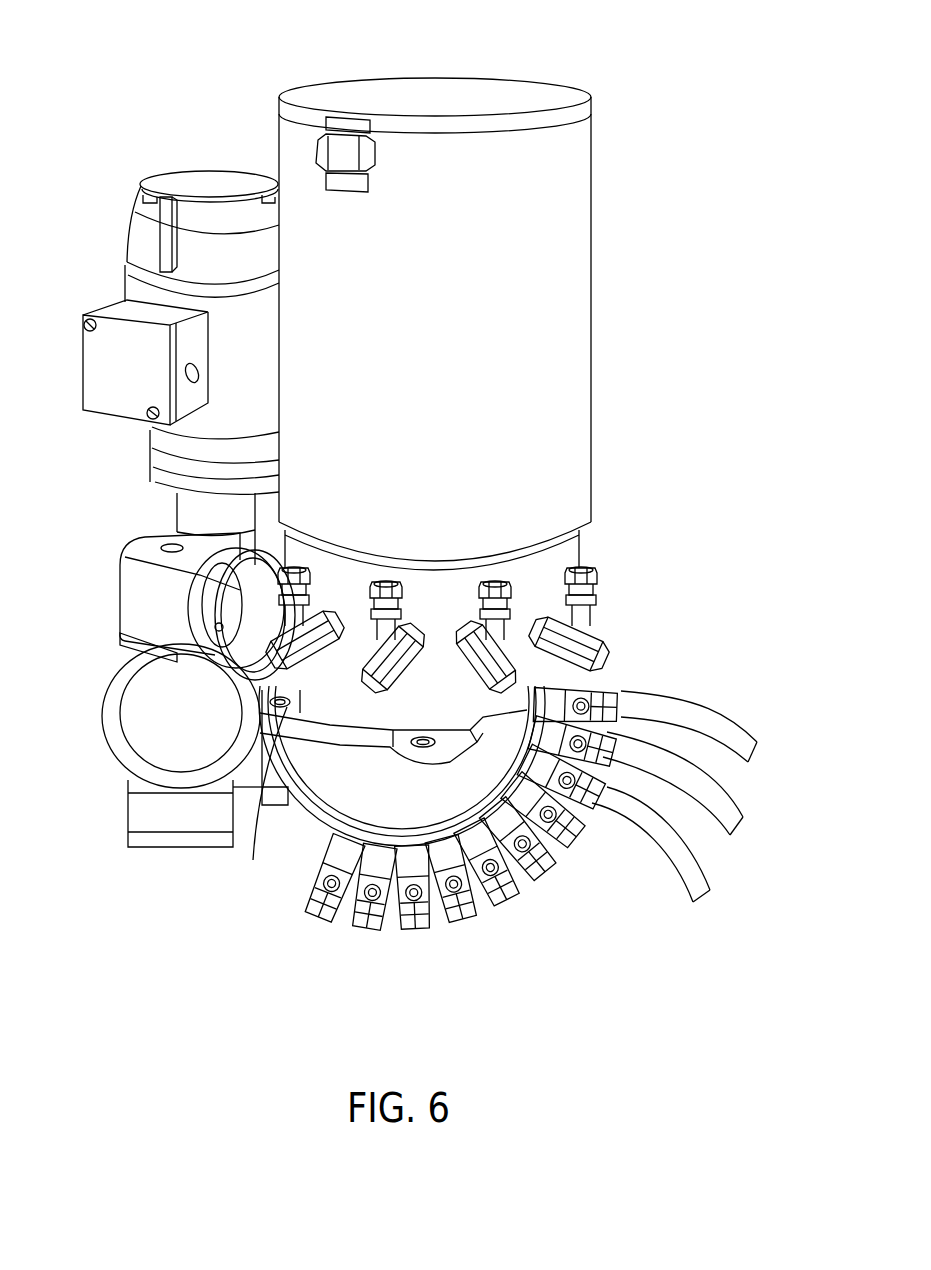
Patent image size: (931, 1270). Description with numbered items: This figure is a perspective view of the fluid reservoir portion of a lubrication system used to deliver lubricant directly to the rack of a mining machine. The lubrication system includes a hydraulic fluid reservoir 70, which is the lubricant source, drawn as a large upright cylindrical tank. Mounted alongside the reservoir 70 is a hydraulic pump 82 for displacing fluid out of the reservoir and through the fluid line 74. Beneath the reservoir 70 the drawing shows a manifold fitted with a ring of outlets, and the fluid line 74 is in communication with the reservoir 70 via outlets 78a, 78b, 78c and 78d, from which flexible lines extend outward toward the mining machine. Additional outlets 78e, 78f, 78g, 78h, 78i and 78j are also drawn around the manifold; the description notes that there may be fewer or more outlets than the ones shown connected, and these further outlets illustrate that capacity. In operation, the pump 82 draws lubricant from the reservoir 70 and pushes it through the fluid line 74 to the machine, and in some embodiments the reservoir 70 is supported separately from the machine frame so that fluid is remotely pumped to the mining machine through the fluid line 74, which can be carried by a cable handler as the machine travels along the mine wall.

The hydraulic fluid reservoir 70 is at (487, 157).
The hydraulic pump 82 is at (167, 255).
The fluid line 74 is at (738, 738).
The outlet 78a is at (593, 641).
The outlet 78b is at (488, 678).
The outlet 78c is at (373, 690).
The outlet 78d is at (290, 680).
The outlet 78e is at (533, 875).
The outlet 78f is at (493, 905).
The outlet 78g is at (453, 913).
The outlet 78h is at (413, 913).
The outlet 78i is at (370, 927).
The outlet 78j is at (327, 917).